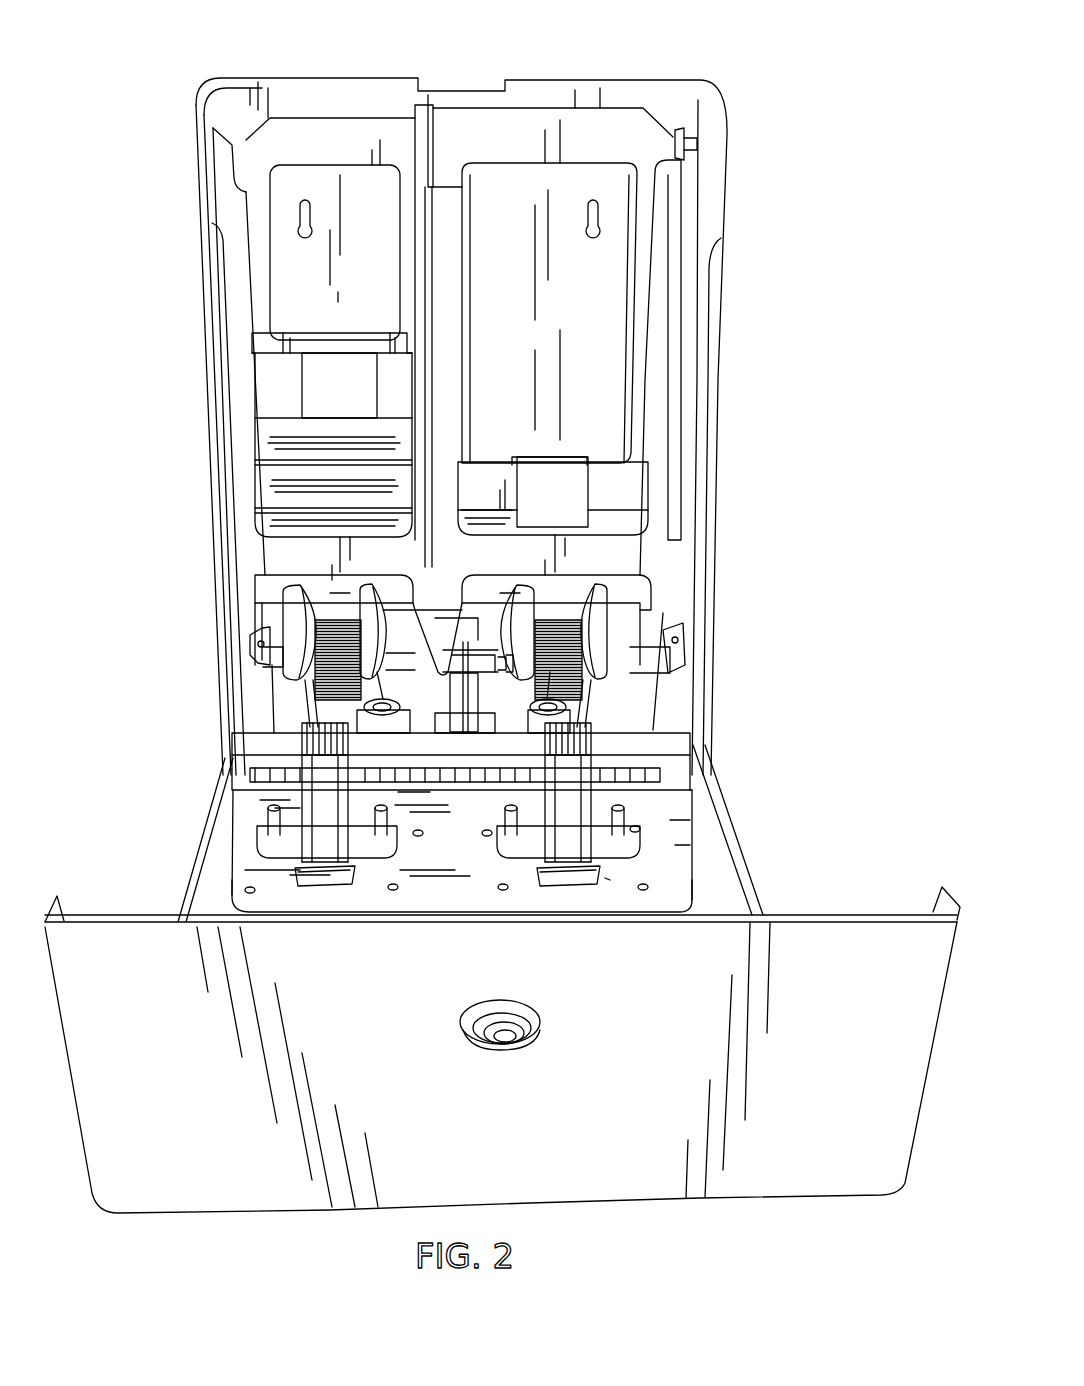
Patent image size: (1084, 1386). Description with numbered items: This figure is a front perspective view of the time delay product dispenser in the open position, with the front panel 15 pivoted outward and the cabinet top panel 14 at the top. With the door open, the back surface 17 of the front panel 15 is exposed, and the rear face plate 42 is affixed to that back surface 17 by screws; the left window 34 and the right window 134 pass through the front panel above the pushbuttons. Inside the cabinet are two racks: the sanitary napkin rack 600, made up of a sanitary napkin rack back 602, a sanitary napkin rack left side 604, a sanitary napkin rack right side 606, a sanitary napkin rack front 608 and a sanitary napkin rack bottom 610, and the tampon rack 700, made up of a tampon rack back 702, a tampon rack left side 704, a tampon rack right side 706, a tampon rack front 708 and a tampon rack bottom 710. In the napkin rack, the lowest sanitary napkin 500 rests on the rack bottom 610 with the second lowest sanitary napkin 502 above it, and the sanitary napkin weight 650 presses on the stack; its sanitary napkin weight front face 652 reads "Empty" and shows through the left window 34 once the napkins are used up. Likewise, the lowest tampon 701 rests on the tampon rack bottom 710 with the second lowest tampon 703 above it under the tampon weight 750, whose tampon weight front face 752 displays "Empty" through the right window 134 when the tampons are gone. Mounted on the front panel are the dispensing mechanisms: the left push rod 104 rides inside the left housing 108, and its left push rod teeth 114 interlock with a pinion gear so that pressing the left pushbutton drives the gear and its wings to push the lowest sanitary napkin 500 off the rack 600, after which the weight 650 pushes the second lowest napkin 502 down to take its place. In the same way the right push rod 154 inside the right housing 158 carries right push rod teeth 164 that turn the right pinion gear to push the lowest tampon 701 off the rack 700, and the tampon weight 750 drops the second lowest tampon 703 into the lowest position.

The top panel 14 is at (502, 1050).
The front panel 15 is at (706, 896).
The back surface 17 is at (470, 833).
The left window 34 is at (307, 882).
The rear face plate 42 is at (252, 903).
The left push rod 104 is at (323, 793).
The left housing 108 is at (290, 835).
The left push rod teeth 114 is at (300, 748).
The right window 134 is at (608, 874).
The right push rod 154 is at (628, 773).
The right housing 158 is at (590, 805).
The right push rod teeth 164 is at (590, 745).
The lowest sanitary napkin 500 is at (265, 592).
The second lowest sanitary napkin 502 is at (268, 523).
The sanitary napkin rack 600 is at (187, 188).
The sanitary napkin rack back 602 is at (325, 211).
The sanitary napkin rack left side 604 is at (228, 152).
The sanitary napkin rack right side 606 is at (427, 133).
The sanitary napkin rack front 608 is at (242, 215).
The sanitary napkin rack bottom 610 is at (255, 628).
The sanitary napkin weight 650 is at (318, 328).
The sanitary napkin weight front face 652 is at (310, 378).
The tampon rack 700 is at (737, 124).
The lowest tampon 701 is at (645, 598).
The tampon rack back 702 is at (549, 275).
The second lowest tampon 703 is at (632, 520).
The tampon rack left side 704 is at (440, 163).
The tampon rack right side 706 is at (688, 152).
The tampon rack front 708 is at (440, 170).
The tampon rack bottom 710 is at (675, 614).
The tampon weight 750 is at (592, 453).
The tampon weight front face 752 is at (582, 493).